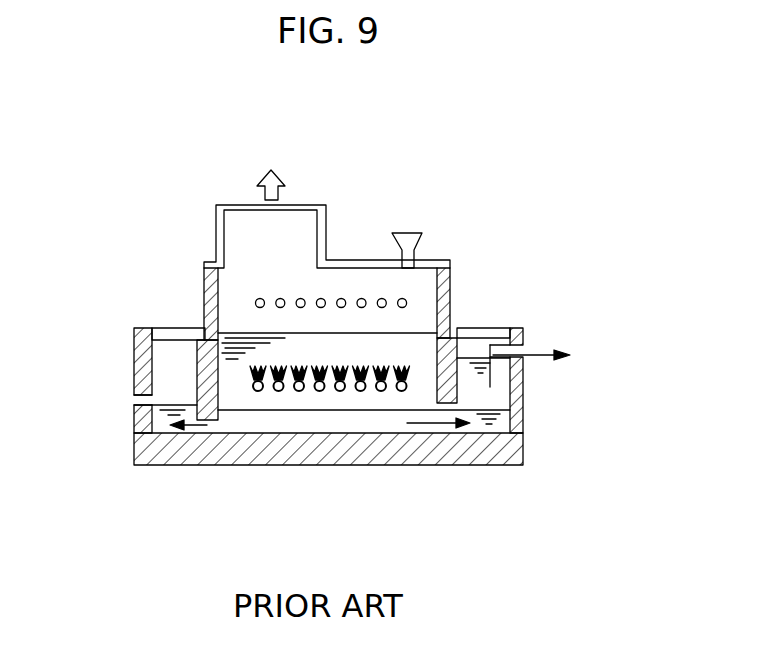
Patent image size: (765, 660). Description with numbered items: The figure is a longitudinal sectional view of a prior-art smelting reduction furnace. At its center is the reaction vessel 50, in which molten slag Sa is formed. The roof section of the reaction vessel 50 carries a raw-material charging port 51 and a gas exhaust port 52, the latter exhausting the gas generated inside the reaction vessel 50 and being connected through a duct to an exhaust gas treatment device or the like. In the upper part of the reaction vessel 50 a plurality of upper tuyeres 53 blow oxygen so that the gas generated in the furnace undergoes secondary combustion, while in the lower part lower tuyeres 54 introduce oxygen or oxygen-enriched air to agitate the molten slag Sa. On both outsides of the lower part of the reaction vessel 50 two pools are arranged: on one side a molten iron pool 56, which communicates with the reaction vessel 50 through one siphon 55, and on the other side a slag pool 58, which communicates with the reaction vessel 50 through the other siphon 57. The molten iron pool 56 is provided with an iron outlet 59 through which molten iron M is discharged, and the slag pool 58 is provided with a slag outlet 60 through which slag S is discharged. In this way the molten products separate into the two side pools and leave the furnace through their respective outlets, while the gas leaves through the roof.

The reaction vessel 50 is at (474, 260).
The raw-material charging port 51 is at (423, 237).
The gas exhaust port 52 is at (302, 205).
The upper tuyeres 53 is at (410, 303).
The lower tuyeres 54 is at (380, 392).
The siphon 55 is at (200, 424).
The molten iron pool 56 is at (160, 362).
The siphon 57 is at (452, 404).
The slag pool 58 is at (522, 337).
The iron outlet 59 is at (118, 397).
The slag outlet 60 is at (537, 363).
The molten slag Sa is at (230, 343).
The slag S is at (490, 357).
The molten iron M is at (207, 427).